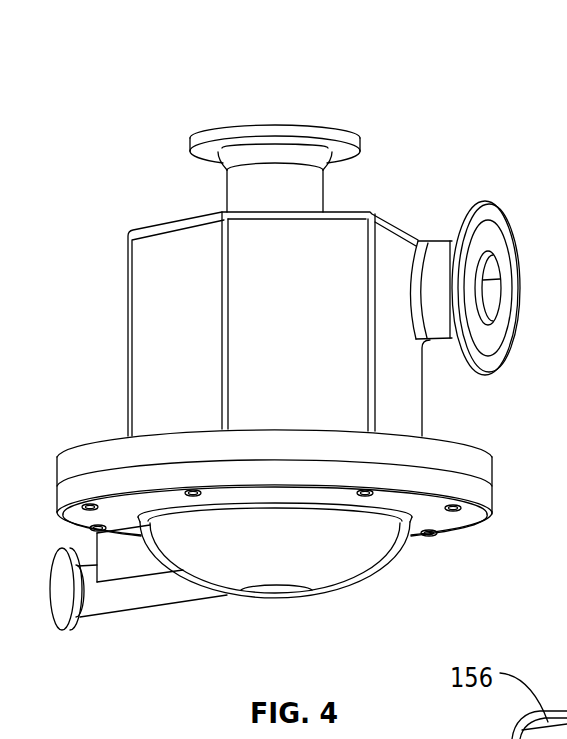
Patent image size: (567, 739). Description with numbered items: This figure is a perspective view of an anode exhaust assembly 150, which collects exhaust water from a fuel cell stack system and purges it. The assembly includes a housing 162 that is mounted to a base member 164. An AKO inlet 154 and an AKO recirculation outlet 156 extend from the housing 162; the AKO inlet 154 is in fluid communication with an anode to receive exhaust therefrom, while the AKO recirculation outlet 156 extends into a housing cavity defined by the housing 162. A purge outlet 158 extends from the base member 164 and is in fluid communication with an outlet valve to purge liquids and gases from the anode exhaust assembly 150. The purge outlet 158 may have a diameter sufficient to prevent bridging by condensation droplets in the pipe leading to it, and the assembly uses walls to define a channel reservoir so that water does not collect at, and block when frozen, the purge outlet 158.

The anode exhaust assembly 150 is at (286, 350).
The AKO inlet 154 is at (440, 247).
The AKO recirculation outlet 156 is at (320, 127).
The purge outlet 158 is at (115, 600).
The housing 162 is at (152, 224).
The base member 164 is at (232, 580).